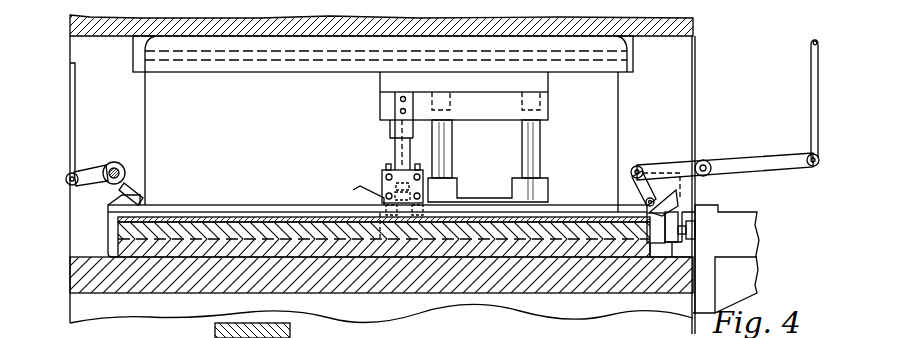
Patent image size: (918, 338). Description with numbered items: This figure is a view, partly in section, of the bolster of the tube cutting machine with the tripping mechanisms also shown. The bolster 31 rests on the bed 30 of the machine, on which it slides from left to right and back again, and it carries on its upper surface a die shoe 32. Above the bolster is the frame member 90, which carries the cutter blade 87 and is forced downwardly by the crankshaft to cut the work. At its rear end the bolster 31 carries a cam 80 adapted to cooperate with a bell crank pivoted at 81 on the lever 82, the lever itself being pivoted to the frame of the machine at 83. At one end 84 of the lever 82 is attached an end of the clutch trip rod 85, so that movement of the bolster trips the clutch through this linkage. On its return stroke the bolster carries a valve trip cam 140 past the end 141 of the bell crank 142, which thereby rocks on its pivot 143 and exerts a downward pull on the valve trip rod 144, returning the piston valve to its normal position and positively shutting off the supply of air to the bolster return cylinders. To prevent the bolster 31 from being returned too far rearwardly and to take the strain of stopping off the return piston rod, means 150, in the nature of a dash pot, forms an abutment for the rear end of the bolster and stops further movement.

The bed 30 is at (492, 277).
The bolster 31 is at (543, 230).
The die shoe 32 is at (523, 212).
The cam 80 is at (677, 200).
The bell crank pivot 81 is at (640, 165).
The lever 82 is at (723, 163).
The lever pivot 83 is at (703, 160).
The lever end 84 is at (813, 167).
The clutch trip rod 85 is at (813, 110).
The cutter blade 87 is at (400, 146).
The frame member 90 is at (543, 102).
The valve trip cam 140 is at (142, 207).
The bell crank end 141 is at (148, 190).
The bell crank 142 is at (97, 168).
The bell crank pivot 143 is at (127, 167).
The valve trip rod 144 is at (73, 123).
The bolster stop means 150 is at (737, 222).